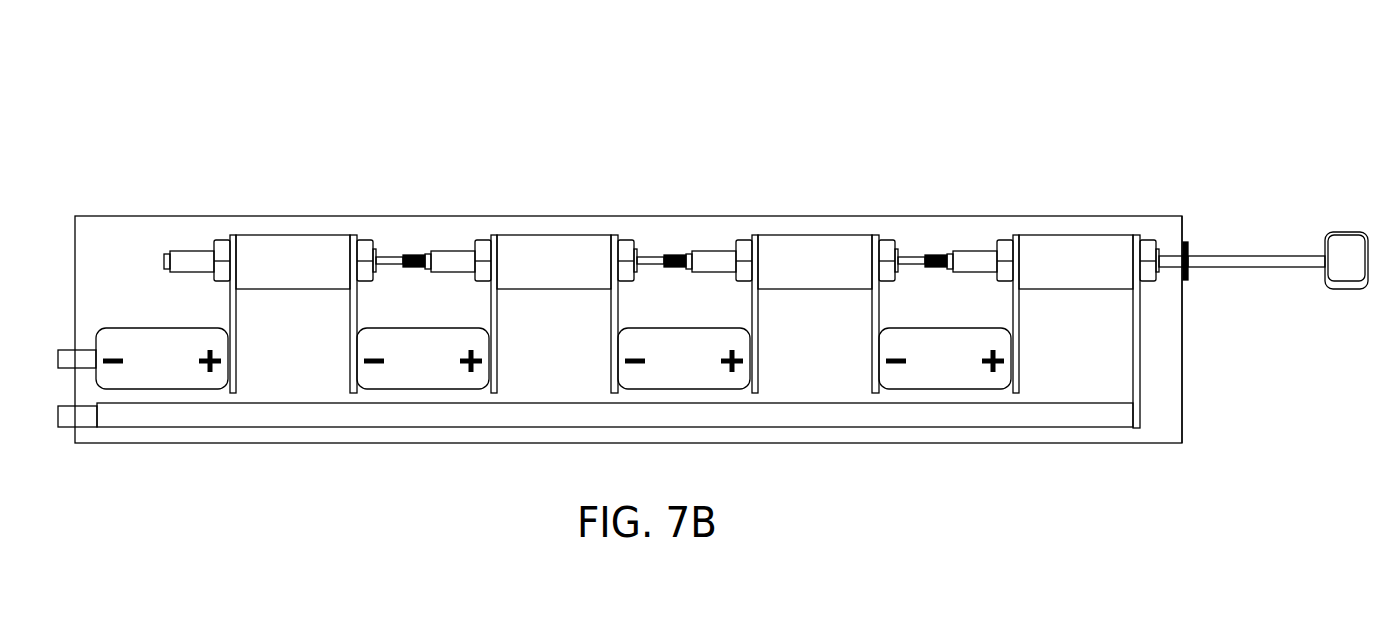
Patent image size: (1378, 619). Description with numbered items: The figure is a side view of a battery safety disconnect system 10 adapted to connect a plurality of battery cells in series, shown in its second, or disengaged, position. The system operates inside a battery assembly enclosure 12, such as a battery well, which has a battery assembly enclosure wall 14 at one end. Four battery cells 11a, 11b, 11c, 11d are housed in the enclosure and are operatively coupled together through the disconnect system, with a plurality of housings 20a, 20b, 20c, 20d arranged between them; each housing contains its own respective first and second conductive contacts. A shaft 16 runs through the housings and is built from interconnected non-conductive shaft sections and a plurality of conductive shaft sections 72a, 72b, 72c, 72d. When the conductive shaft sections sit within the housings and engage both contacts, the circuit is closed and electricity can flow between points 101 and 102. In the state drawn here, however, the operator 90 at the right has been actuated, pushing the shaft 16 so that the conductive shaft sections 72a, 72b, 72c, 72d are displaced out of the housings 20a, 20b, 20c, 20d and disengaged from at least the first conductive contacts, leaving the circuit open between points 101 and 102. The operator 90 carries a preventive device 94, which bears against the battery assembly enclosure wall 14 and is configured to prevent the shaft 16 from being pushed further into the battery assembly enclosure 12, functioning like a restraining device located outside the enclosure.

The battery safety disconnect system 10 is at (181, 109).
The battery assembly enclosure 12 is at (109, 225).
The battery assembly enclosure wall 14 is at (1183, 305).
The shaft 16 is at (672, 253).
The housing 20a is at (1072, 250).
The housing 20b is at (809, 250).
The housing 20c is at (542, 250).
The housing 20d is at (281, 250).
The conductive shaft section 72a is at (968, 255).
The conductive shaft section 72b is at (689, 215).
The conductive shaft section 72c is at (448, 250).
The conductive shaft section 72d is at (192, 250).
The battery cell 11a is at (907, 330).
The battery cell 11b is at (648, 330).
The battery cell 11c is at (383, 330).
The battery cell 11d is at (123, 330).
The operator 90 is at (1340, 240).
The preventive device 94 is at (1189, 245).
The point 101 is at (63, 414).
The point 102 is at (62, 355).